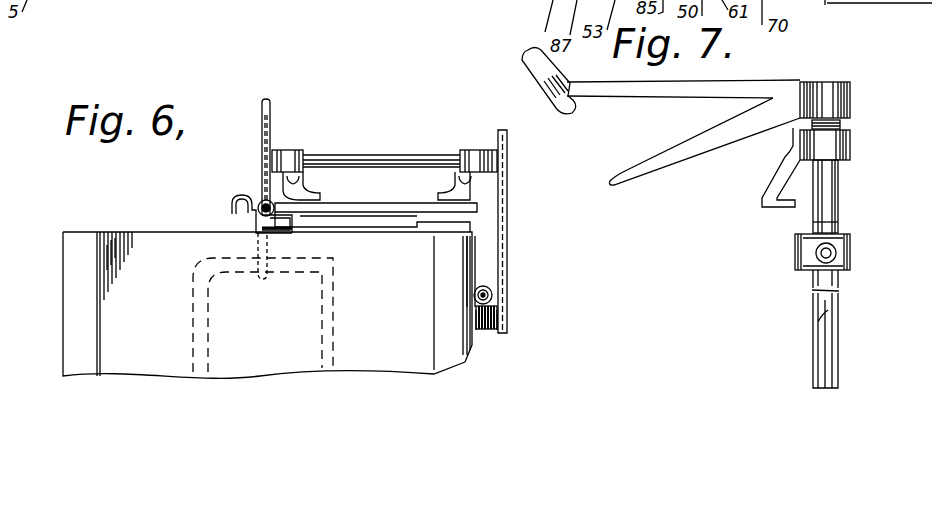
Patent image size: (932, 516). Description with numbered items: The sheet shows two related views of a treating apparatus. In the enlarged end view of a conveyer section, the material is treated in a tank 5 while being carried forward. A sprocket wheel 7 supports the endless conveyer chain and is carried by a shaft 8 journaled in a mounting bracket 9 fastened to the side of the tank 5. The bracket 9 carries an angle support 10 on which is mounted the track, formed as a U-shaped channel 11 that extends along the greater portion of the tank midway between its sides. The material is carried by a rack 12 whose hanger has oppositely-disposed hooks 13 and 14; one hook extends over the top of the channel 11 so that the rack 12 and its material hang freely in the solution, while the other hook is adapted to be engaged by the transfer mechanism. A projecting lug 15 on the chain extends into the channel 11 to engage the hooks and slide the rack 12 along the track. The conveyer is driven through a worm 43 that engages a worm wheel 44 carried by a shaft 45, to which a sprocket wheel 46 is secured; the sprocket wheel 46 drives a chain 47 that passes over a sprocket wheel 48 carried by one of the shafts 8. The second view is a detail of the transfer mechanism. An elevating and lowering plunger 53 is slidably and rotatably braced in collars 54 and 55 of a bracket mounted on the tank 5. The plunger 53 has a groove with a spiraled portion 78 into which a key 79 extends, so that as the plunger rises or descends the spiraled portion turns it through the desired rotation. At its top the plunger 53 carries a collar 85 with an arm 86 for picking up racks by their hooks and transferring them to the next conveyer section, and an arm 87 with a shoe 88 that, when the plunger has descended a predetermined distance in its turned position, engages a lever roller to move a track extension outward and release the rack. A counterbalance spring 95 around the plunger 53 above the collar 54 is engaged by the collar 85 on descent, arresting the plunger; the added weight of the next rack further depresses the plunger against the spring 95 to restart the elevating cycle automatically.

In FIG. 6, the tank 5 is at (82, 240).
In FIG. 6, the sprocket wheel 7 is at (270, 140).
In FIG. 6, the shaft 8 is at (385, 152).
In FIG. 6, the mounting bracket 9 is at (395, 205).
In FIG. 6, the angle support 10 is at (292, 215).
In FIG. 6, the U-shaped channel 11 is at (284, 228).
In FIG. 6, the rack 12 is at (213, 313).
In FIG. 6, the hook 13 is at (290, 193).
In FIG. 6, the hook 14 is at (243, 217).
In FIG. 6, the projecting lug 15 is at (258, 205).
In FIG. 6, the worm 43 is at (490, 290).
In FIG. 6, the worm wheel 44 is at (481, 330).
In FIG. 6, the shaft 45 is at (494, 330).
In FIG. 6, the sprocket wheel 46 is at (507, 330).
In FIG. 6, the chain 47 is at (507, 228).
In FIG. 6, the sprocket wheel 48 is at (507, 142).
In FIG. 7, the elevating and lowering plunger 53 is at (840, 192).
In FIG. 7, the collar 54 is at (853, 143).
In FIG. 7, the collar 55 is at (845, 240).
In FIG. 7, the spiraled groove portion 78 is at (816, 326).
In FIG. 7, the key 79 is at (850, 252).
In FIG. 7, the collar 85 is at (853, 96).
In FIG. 7, the arm 86 is at (699, 162).
In FIG. 7, the arm 87 is at (770, 84).
In FIG. 7, the shoe 88 is at (524, 66).
In FIG. 7, the spring 95 is at (848, 124).